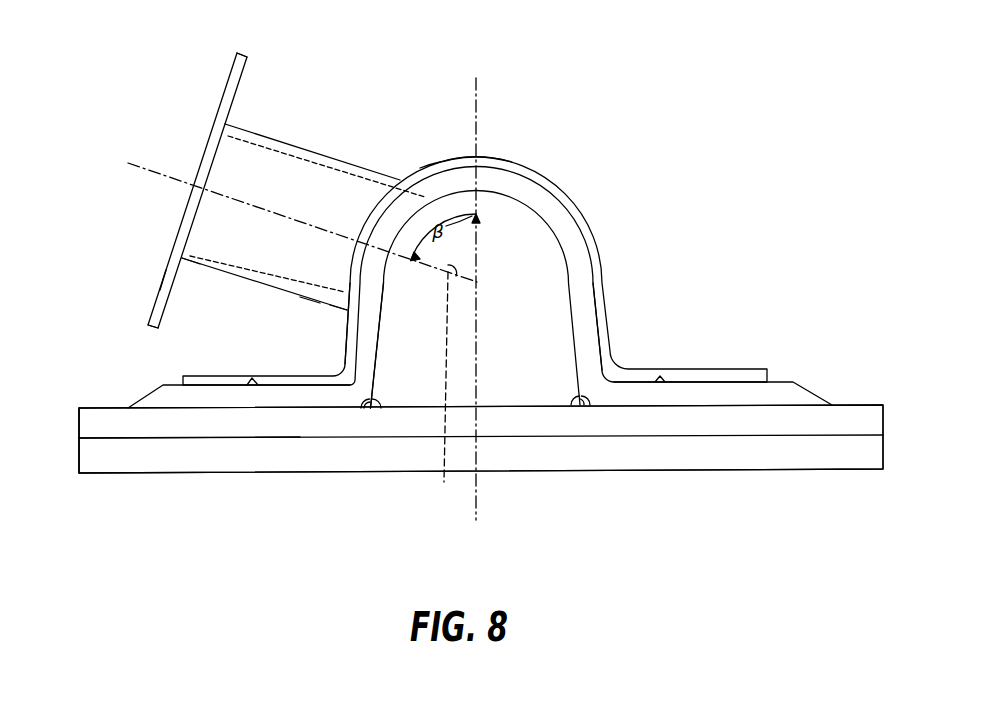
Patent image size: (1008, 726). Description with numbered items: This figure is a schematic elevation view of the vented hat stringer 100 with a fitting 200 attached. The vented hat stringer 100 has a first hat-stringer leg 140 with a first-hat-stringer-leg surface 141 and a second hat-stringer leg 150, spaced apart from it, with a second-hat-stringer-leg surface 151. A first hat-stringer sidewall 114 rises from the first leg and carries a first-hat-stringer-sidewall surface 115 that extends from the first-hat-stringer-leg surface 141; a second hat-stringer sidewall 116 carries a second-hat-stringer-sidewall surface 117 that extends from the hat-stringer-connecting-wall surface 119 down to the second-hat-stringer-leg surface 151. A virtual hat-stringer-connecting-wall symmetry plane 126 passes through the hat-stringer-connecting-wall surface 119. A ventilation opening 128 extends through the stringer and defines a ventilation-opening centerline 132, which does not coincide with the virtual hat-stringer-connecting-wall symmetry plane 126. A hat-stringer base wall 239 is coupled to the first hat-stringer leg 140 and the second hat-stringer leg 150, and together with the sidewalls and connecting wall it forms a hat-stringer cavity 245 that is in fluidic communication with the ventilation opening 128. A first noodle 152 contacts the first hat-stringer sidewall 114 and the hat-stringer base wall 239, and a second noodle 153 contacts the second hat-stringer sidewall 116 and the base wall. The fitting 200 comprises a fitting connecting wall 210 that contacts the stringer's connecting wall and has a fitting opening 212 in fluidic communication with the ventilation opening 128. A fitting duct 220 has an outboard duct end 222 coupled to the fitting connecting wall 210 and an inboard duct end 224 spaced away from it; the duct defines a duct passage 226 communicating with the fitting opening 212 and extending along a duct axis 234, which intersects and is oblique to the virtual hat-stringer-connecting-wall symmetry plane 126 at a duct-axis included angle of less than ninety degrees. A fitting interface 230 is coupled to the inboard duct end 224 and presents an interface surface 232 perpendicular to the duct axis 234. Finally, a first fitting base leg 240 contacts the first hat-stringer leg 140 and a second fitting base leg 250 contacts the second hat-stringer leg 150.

The vented hat stringer 100 is at (718, 492).
The first hat-stringer sidewall 114 is at (364, 370).
The first-hat-stringer-sidewall surface 115 is at (345, 338).
The second hat-stringer sidewall 116 is at (588, 342).
The second-hat-stringer-sidewall surface 117 is at (593, 287).
The hat-stringer-connecting-wall surface 119 is at (488, 158).
The virtual hat-stringer-connecting-wall symmetry plane 126 is at (479, 110).
The ventilation opening 128 is at (433, 161).
The ventilation-opening centerline 132 is at (445, 394).
The first hat-stringer leg 140 is at (194, 394).
The first-hat-stringer-leg surface 141 is at (260, 388).
The second hat-stringer leg 150 is at (747, 392).
The second-hat-stringer-leg surface 151 is at (652, 382).
The first noodle 152 is at (370, 408).
The second noodle 153 is at (580, 405).
The fitting 200 is at (288, 114).
The fitting connecting wall 210 is at (539, 174).
The fitting opening 212 is at (307, 304).
The fitting duct 220 is at (240, 253).
The outboard duct end 222 is at (327, 311).
The inboard duct end 224 is at (183, 265).
The duct passage 226 is at (196, 125).
The fitting interface 230 is at (152, 329).
The interface surface 232 is at (160, 290).
The duct axis 234 is at (126, 172).
The hat-stringer base wall 239 is at (85, 423).
The first fitting base leg 240 is at (263, 376).
The hat-stringer cavity 245 is at (509, 374).
The second fitting base leg 250 is at (697, 369).